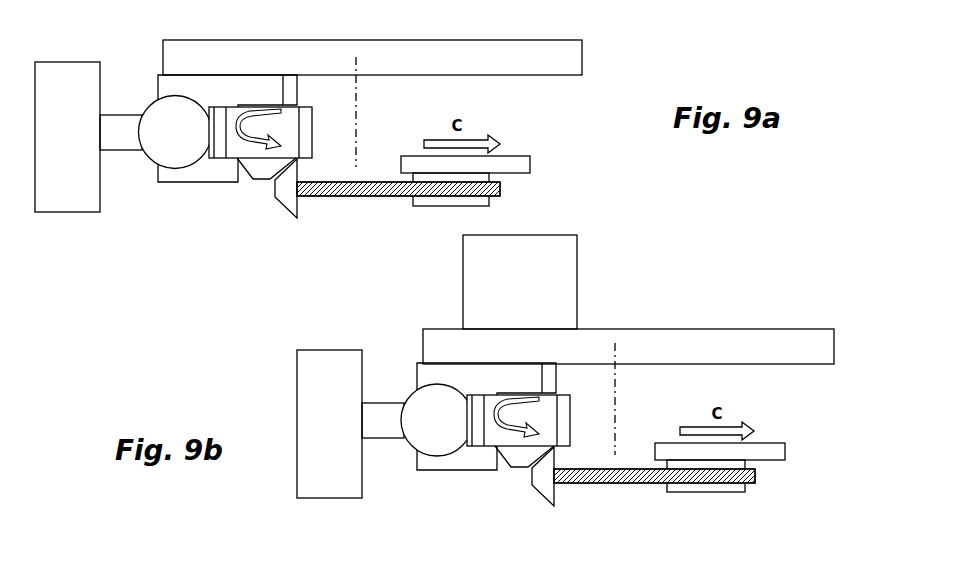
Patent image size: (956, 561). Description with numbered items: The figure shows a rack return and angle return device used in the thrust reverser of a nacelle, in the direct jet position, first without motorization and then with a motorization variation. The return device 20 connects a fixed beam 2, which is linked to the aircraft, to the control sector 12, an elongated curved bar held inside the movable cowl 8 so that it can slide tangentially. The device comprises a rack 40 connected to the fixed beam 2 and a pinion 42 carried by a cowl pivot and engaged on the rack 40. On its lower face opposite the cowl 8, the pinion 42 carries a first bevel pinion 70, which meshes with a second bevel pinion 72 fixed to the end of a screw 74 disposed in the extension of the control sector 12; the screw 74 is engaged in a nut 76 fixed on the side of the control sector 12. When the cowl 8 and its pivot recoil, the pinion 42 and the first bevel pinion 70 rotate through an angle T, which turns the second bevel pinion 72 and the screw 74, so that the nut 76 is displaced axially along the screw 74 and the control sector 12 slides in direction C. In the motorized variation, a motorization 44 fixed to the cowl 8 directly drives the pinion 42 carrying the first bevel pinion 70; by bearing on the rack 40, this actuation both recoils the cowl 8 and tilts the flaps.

In FIG. 9A, the fixed beam 2 is at (88, 212).
In FIG. 9B, the fixed beam 2 is at (350, 498).
In FIG. 9A, the movable cowl 8 is at (502, 40).
In FIG. 9B, the movable cowl 8 is at (763, 329).
In FIG. 9A, the control sector 12 is at (528, 160).
In FIG. 9B, the control sector 12 is at (783, 446).
In FIG. 9A, the return device 20 is at (627, 63).
In FIG. 9B, the return device 20 is at (885, 311).
In FIG. 9A, the rack 40 is at (153, 160).
In FIG. 9B, the rack 40 is at (415, 448).
In FIG. 9A, the pinion 42 is at (312, 149).
In FIG. 9B, the pinion 42 is at (569, 436).
In FIG. 9B, the motorization 44 is at (577, 272).
In FIG. 9A, the first bevel pinion 70 is at (258, 182).
In FIG. 9B, the first bevel pinion 70 is at (516, 470).
In FIG. 9A, the second bevel pinion 72 is at (283, 214).
In FIG. 9B, the second bevel pinion 72 is at (541, 502).
In FIG. 9A, the screw 74 is at (360, 197).
In FIG. 9B, the screw 74 is at (622, 484).
In FIG. 9A, the nut 76 is at (463, 206).
In FIG. 9B, the nut 76 is at (720, 492).